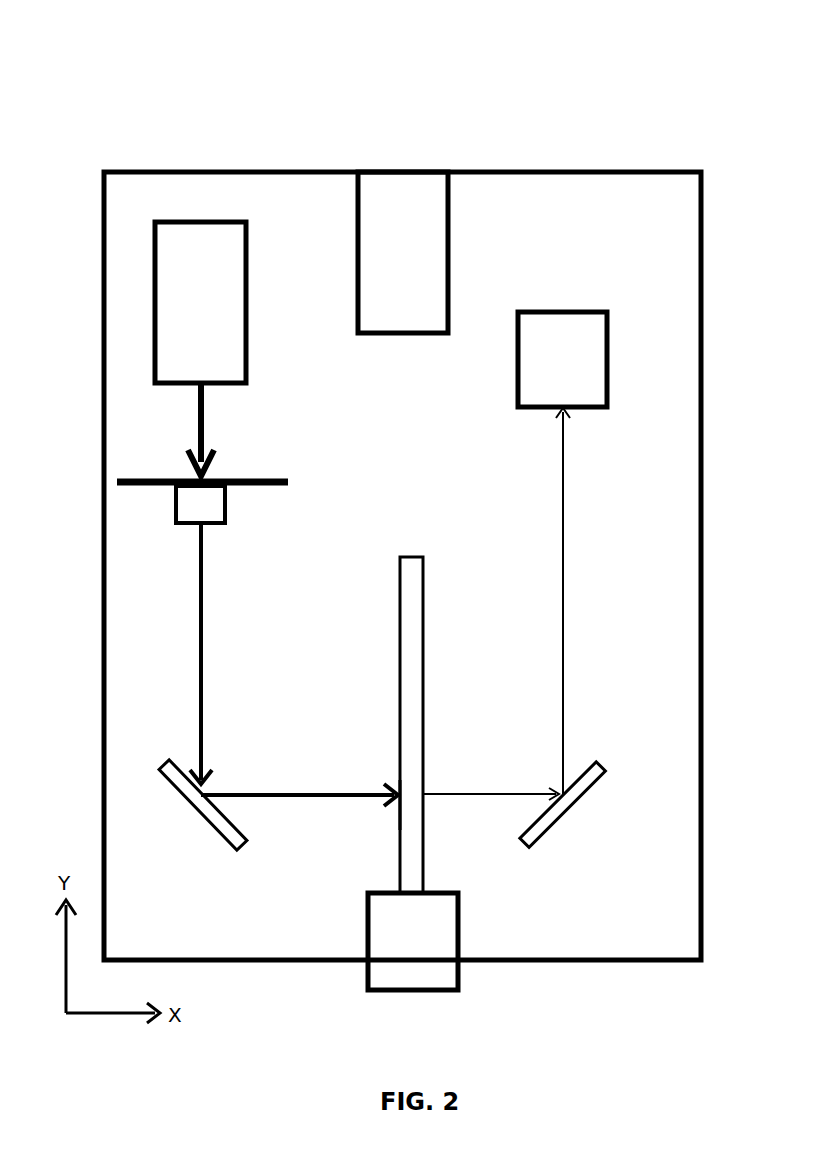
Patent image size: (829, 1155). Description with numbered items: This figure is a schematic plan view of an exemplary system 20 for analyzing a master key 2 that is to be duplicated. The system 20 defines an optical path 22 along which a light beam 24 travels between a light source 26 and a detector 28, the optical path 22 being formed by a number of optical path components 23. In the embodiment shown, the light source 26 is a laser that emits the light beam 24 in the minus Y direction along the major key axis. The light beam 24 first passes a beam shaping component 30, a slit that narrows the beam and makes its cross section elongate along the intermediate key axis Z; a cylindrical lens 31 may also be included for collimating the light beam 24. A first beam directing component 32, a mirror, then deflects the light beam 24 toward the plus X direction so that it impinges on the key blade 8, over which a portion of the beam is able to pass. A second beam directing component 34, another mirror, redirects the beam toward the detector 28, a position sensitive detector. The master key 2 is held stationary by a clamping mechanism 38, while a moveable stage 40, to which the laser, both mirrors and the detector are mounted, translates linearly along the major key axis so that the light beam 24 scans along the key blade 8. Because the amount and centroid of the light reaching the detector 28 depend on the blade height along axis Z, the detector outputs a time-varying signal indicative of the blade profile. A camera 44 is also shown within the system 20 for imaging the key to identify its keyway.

The master key 2 is at (410, 670).
The key blade 8 is at (410, 808).
The system 20 is at (540, 63).
The optical path 22 is at (188, 648).
The optical path components 23 is at (639, 116).
The light beam 24 is at (308, 792).
The light source 26 is at (155, 305).
The detector 28 is at (607, 358).
The beam shaping component 30 is at (130, 478).
The cylindrical lens 31 is at (176, 503).
The first beam directing component 32 is at (195, 812).
The second beam directing component 34 is at (567, 810).
The clamping mechanism 38 is at (458, 965).
The moveable stage 40 is at (168, 172).
The camera 44 is at (448, 282).